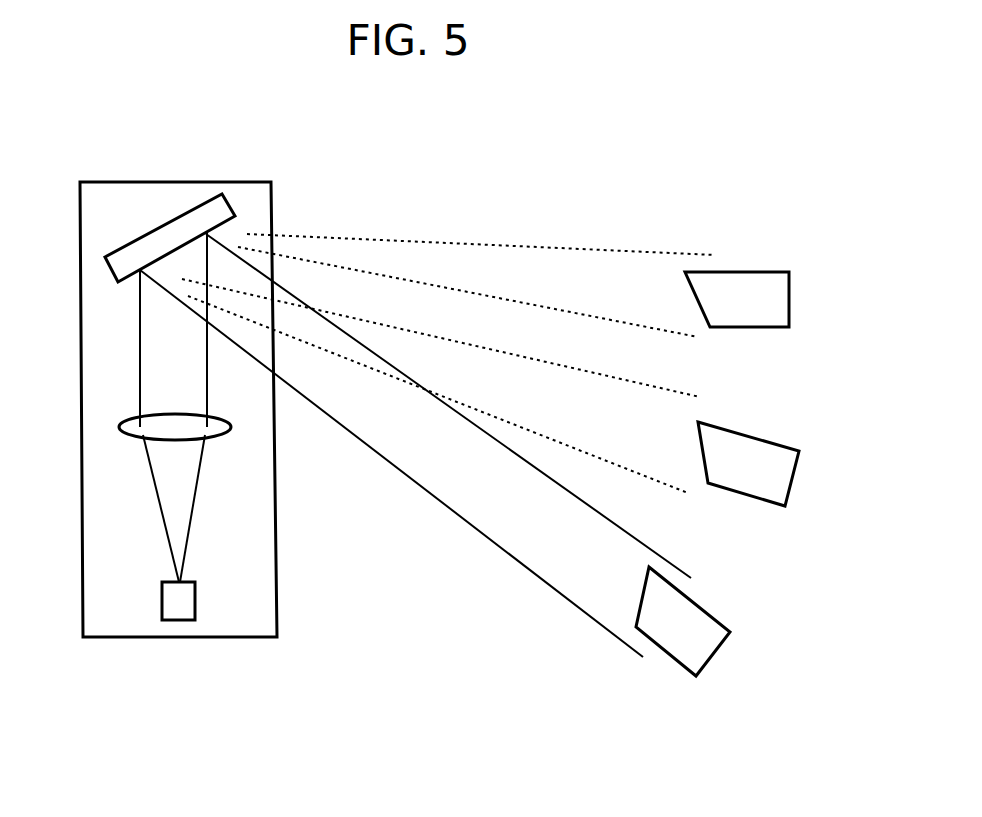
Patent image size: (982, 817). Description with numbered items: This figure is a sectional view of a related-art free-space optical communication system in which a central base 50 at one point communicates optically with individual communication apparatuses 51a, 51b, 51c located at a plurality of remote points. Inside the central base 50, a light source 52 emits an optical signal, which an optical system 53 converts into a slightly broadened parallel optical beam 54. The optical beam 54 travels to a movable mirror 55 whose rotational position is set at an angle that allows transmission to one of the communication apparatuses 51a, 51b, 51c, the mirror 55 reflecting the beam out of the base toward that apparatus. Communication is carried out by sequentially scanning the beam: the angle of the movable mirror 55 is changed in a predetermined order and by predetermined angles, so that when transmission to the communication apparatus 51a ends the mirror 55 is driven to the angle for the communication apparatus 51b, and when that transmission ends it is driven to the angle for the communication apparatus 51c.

The central base 50 is at (277, 568).
The communication apparatus 51a is at (702, 650).
The communication apparatus 51b is at (790, 473).
The communication apparatus 51c is at (783, 297).
The light source 52 is at (178, 620).
The optical system 53 is at (117, 427).
The parallel optical beam 54 is at (160, 365).
The movable mirror 55 is at (197, 217).